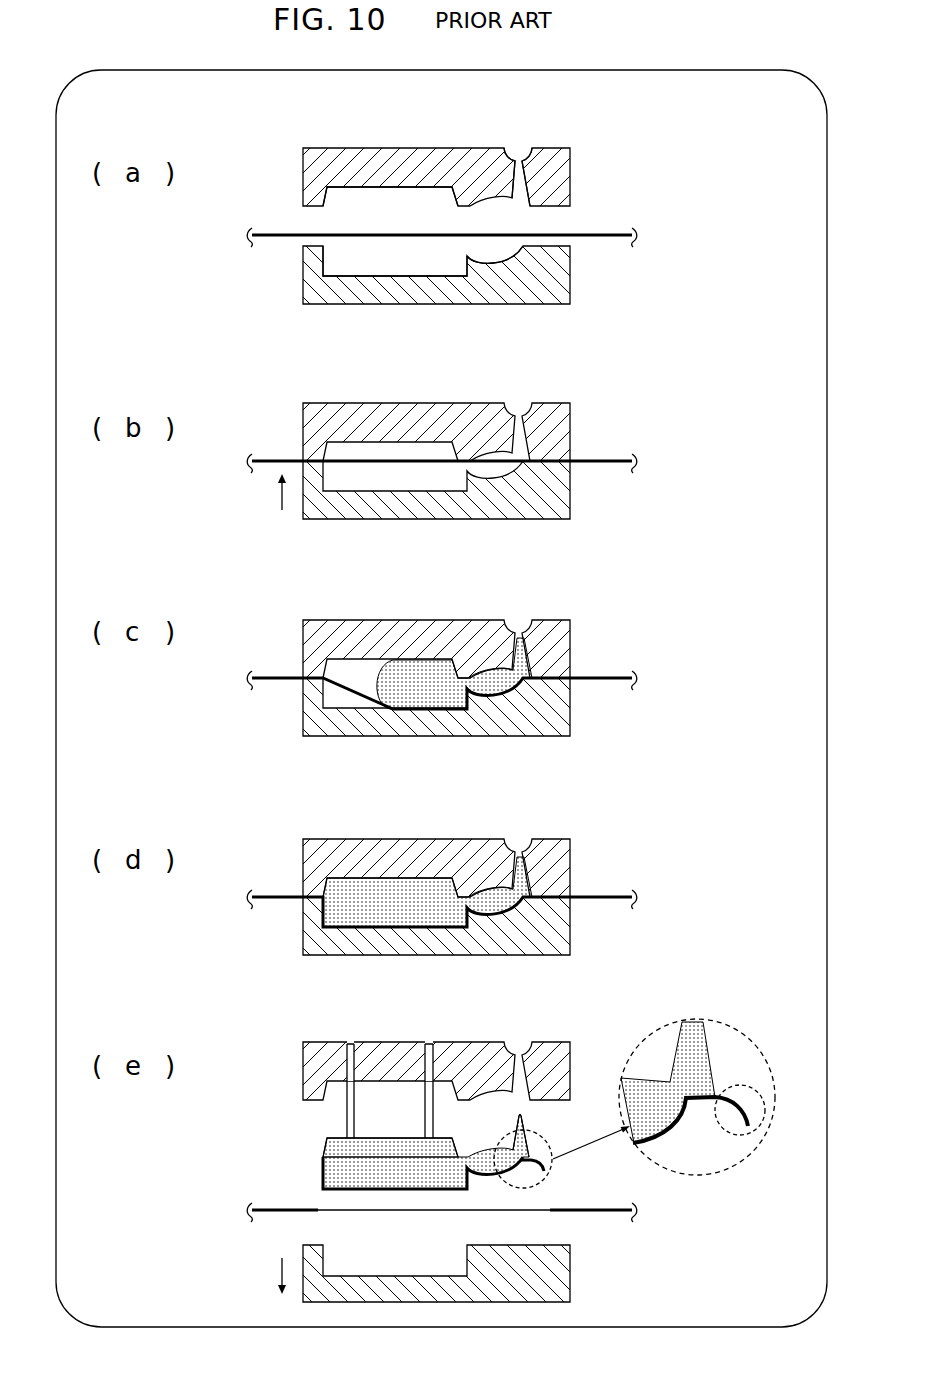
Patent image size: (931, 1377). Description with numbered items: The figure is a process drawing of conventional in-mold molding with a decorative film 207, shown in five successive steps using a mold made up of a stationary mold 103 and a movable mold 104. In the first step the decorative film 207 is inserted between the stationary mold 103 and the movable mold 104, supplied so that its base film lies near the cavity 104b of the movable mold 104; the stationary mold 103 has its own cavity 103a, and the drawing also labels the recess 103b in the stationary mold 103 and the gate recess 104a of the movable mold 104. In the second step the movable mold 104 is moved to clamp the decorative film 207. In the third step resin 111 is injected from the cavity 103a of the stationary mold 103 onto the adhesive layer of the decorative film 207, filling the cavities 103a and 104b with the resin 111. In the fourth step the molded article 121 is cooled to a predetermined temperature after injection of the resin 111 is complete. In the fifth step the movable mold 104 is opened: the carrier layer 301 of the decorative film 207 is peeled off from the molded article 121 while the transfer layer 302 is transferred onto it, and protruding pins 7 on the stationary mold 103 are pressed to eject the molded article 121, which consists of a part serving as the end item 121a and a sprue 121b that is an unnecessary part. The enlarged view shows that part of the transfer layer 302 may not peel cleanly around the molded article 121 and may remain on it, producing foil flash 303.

The stationary mold 103 is at (430, 160).
The cavity of the stationary mold 103a is at (533, 187).
The cavity of upper mold 103b is at (349, 193).
The movable mold 104 is at (437, 290).
The gate recess of lower mold 104a is at (490, 262).
The cavity of the movable mold 104b is at (363, 268).
The decorative film 207 is at (273, 243).
The resin 111 is at (422, 675).
The molded article 121 is at (402, 885).
The end item 121a is at (380, 1153).
The sprue 121b is at (524, 1117).
The protruding pins 7 is at (347, 1115).
The carrier layer 301 is at (430, 1213).
The transfer layer 302 is at (375, 1192).
The foil flash 303 is at (744, 1136).